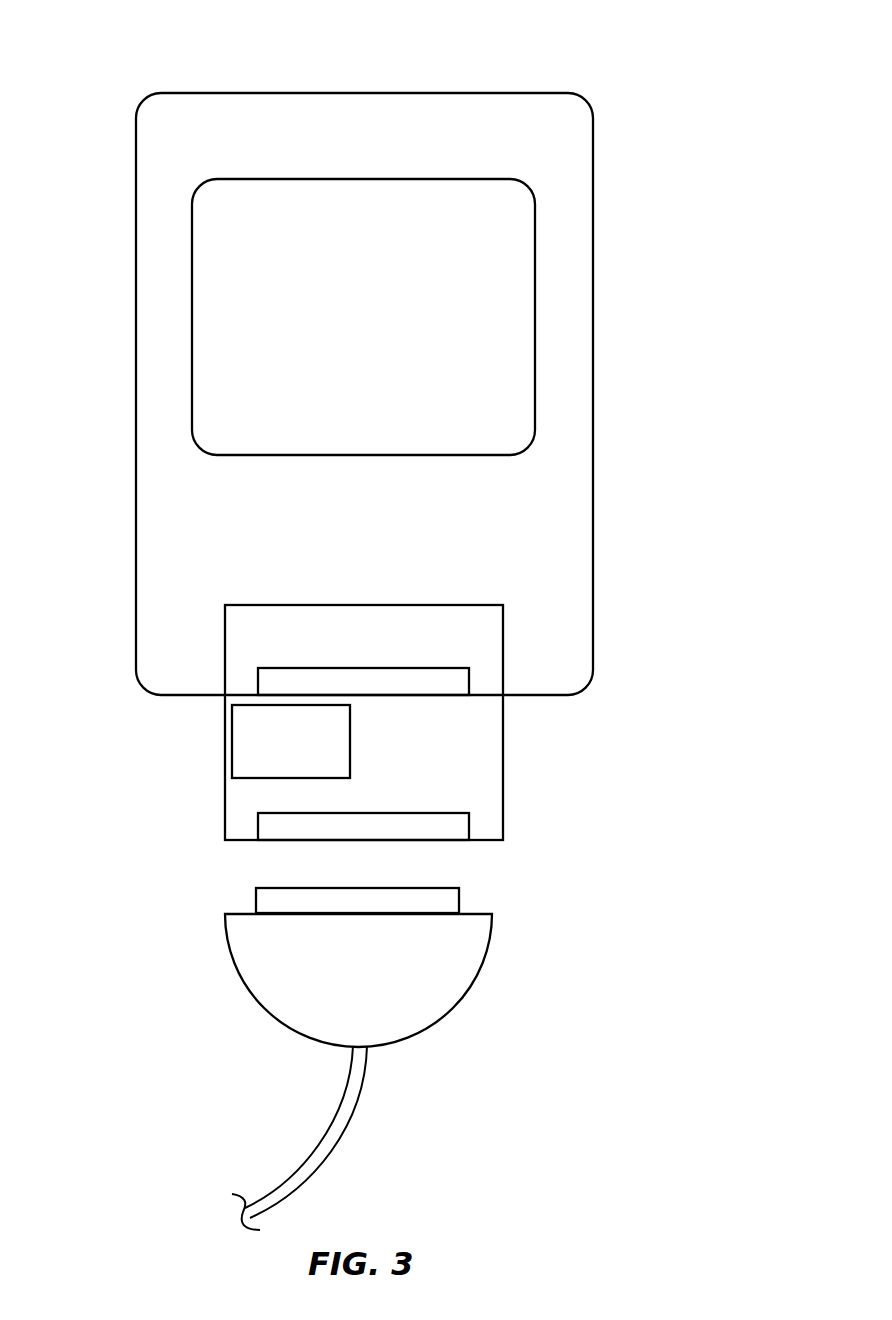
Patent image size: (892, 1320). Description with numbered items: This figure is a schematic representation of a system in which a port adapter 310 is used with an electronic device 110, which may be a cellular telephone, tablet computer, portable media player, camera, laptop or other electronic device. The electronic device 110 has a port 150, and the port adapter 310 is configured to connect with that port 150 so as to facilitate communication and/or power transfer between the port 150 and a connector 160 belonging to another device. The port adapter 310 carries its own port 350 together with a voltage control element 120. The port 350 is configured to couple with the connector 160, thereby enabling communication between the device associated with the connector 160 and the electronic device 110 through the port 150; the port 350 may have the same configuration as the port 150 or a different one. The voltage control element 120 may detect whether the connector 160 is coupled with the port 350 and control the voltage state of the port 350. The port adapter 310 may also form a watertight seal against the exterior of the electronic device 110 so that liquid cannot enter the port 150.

The electronic device 110 is at (614, 152).
The port adapter 310 is at (186, 773).
The port 150 is at (462, 703).
The voltage control element 120 is at (274, 728).
The port 350 is at (461, 844).
The connector 160 is at (206, 949).